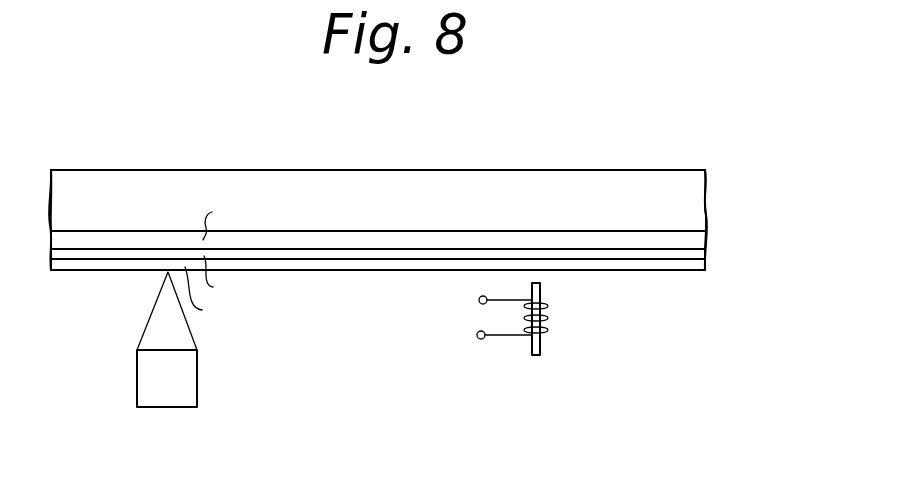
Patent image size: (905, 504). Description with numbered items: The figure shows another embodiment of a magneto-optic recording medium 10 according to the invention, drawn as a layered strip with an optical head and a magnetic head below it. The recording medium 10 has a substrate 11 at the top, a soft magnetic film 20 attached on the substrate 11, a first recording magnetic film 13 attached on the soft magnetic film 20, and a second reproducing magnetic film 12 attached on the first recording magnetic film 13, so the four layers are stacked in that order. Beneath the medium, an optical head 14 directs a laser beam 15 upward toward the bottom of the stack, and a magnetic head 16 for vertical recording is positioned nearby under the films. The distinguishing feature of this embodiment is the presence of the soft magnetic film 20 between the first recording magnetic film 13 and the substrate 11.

The recording medium 10 is at (152, 162).
The substrate 11 is at (706, 192).
The soft magnetic film 20 is at (706, 233).
The first recording magnetic film 13 is at (706, 253).
The second reproducing magnetic film 12 is at (705, 266).
The laser beam 15 is at (188, 334).
The optical head 14 is at (198, 378).
The magnetic head 16 is at (552, 337).